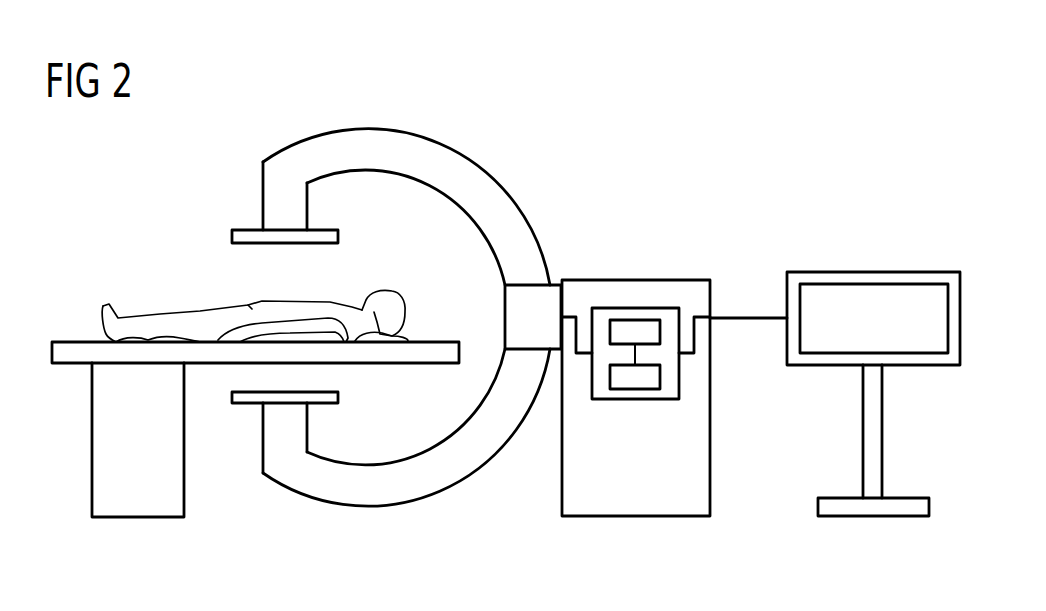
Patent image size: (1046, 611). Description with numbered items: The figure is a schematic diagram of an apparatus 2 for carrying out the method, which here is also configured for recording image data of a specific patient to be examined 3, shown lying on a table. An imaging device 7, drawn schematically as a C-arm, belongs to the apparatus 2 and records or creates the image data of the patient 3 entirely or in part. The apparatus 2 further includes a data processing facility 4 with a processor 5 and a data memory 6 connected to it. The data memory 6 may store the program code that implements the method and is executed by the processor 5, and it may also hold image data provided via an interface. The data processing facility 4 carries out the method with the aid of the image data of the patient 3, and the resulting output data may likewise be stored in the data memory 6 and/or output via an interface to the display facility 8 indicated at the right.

The apparatus 2 is at (595, 280).
The patient 3 is at (152, 332).
The data processing facility 4 is at (666, 308).
The processor 5 is at (633, 327).
The data memory 6 is at (636, 378).
The imaging device 7 is at (497, 194).
The display facility 8 is at (873, 272).